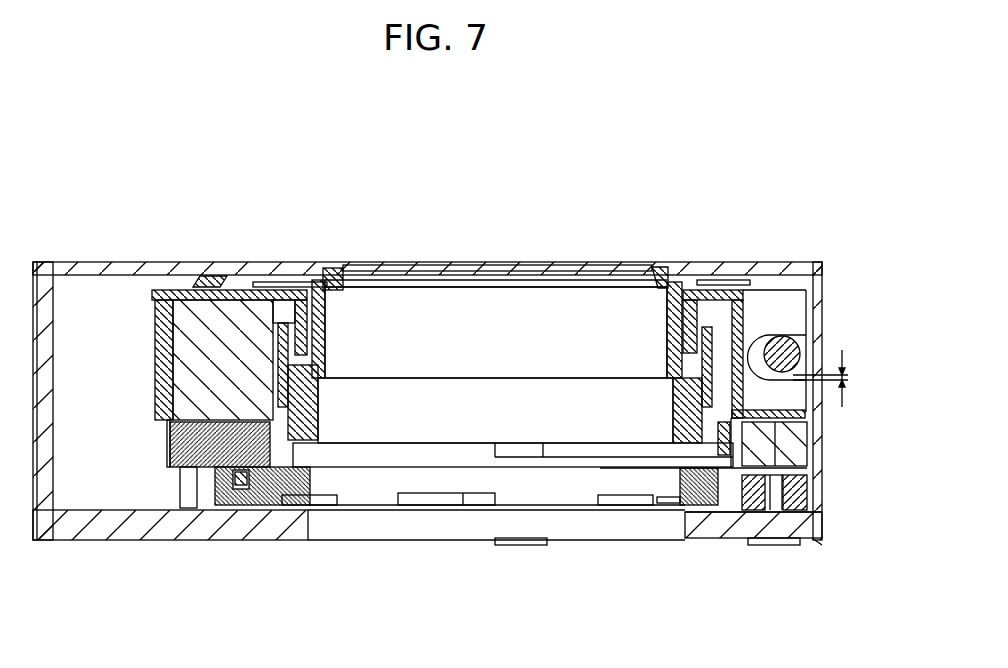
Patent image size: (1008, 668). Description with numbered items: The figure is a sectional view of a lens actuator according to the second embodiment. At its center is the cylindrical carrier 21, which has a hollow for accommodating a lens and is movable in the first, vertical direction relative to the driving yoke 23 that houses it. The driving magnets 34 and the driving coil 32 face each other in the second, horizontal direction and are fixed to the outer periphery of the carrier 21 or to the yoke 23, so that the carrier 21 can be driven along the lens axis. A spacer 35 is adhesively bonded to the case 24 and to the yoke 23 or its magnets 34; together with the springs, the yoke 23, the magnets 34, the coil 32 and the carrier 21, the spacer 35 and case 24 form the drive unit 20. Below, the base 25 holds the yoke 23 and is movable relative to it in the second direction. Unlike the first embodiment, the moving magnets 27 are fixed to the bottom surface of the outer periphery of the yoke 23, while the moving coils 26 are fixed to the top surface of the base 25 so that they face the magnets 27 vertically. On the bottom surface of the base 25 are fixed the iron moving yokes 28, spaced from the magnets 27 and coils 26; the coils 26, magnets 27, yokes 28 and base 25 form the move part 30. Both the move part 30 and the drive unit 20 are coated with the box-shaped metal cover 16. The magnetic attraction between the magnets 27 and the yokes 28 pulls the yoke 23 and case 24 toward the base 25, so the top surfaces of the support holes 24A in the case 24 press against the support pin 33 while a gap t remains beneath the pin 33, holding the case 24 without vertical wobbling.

The cover 16 is at (795, 270).
The drive unit 20 is at (380, 268).
The carrier 21 is at (535, 310).
The driving yoke 23 is at (163, 300).
The case 24 is at (385, 487).
The support holes 24A is at (783, 381).
The base 25 is at (722, 527).
The moving coils 26 is at (795, 496).
The moving magnets 27 is at (798, 443).
The moving yokes 28 is at (770, 545).
The move part 30 is at (813, 545).
The driving coil 32 is at (284, 325).
The support pin 33 is at (798, 340).
The driving magnets 34 is at (218, 312).
The spacer 35 is at (210, 455).